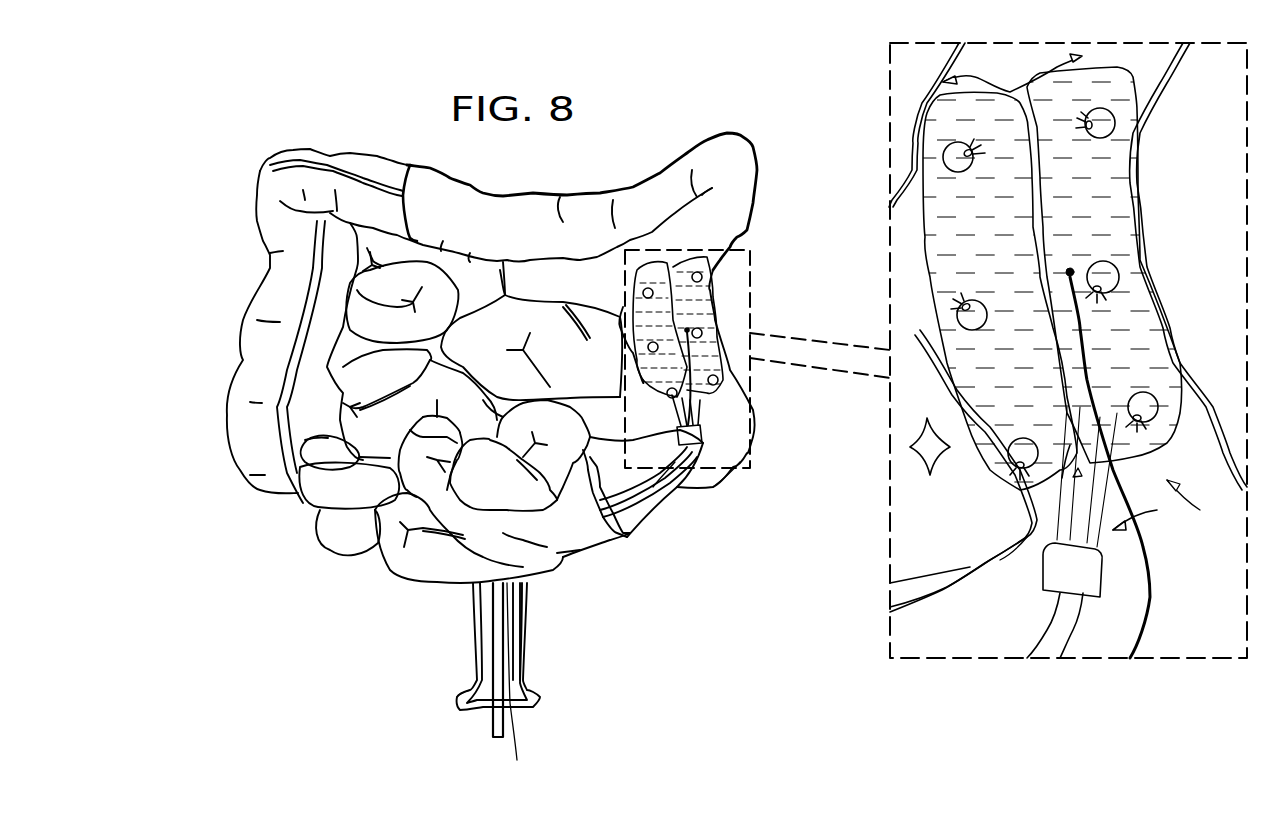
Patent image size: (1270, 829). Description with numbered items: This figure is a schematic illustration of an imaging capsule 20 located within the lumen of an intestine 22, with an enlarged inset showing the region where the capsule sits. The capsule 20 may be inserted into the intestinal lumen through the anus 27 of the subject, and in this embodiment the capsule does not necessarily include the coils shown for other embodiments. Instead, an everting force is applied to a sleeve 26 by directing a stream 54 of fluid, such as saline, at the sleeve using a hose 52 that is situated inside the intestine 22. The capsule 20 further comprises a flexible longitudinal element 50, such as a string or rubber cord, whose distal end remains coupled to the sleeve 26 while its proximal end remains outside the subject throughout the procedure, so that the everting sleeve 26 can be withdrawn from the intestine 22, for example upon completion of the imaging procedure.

The imaging capsule 20 is at (736, 417).
The intestine 22 is at (713, 487).
The sleeve 26 is at (1010, 92).
The anus 27 is at (477, 713).
The flexible longitudinal element 50 is at (510, 722).
The hose 52 is at (653, 487).
The stream 54 is at (1157, 510).